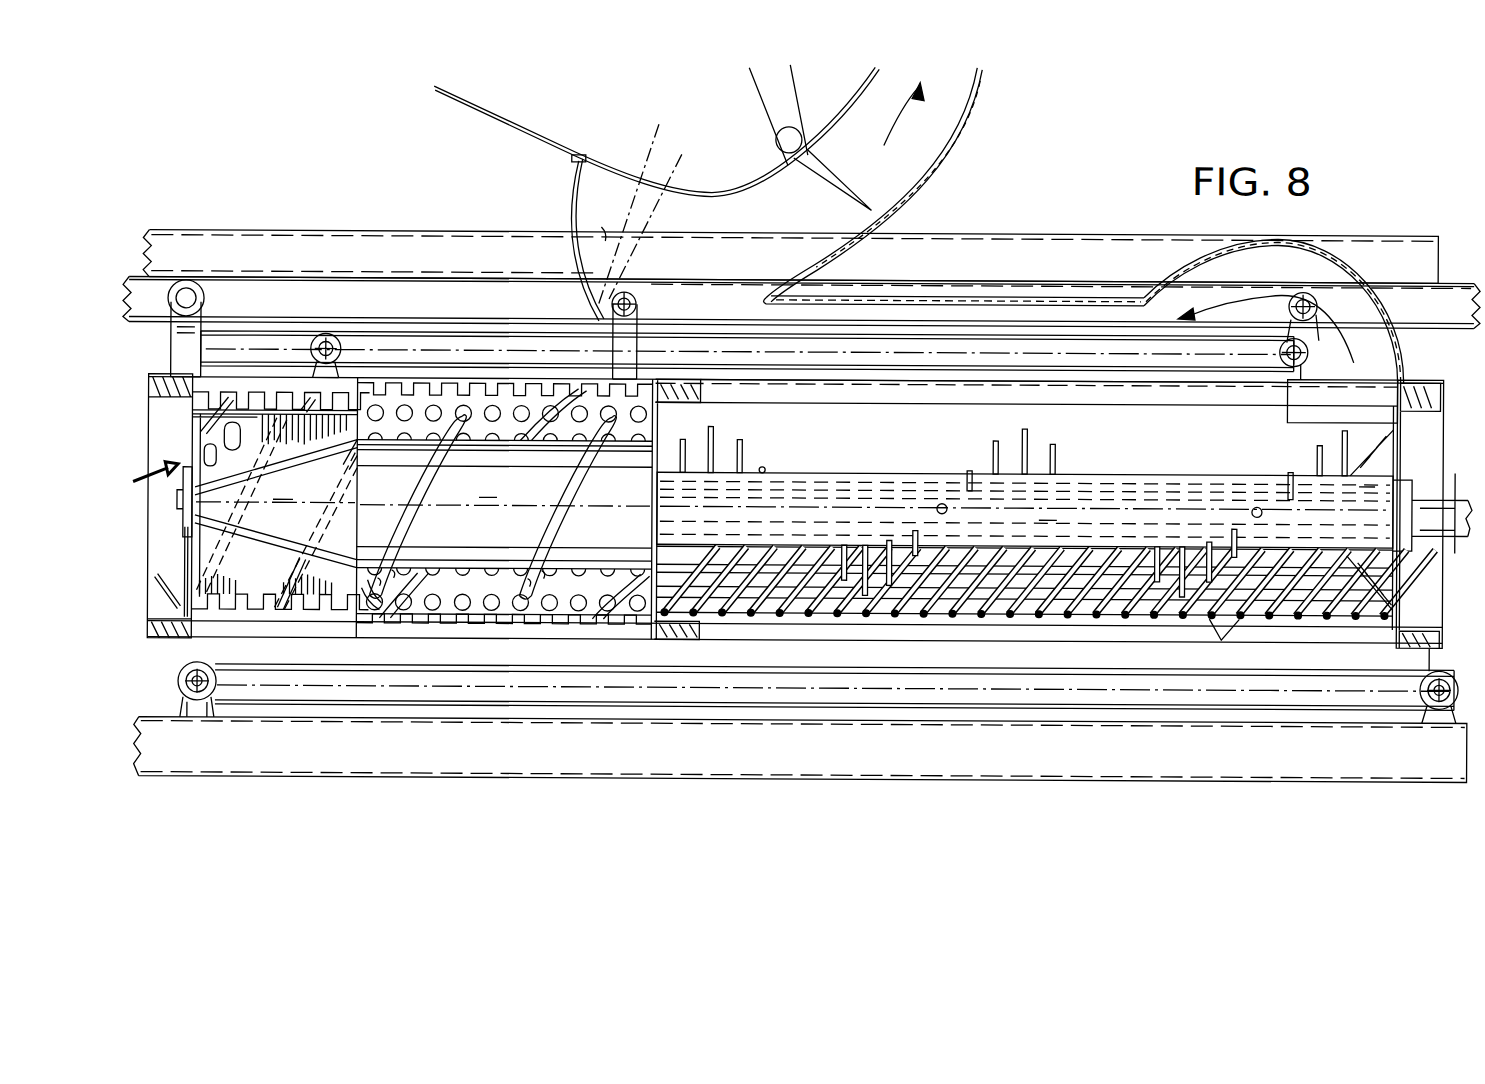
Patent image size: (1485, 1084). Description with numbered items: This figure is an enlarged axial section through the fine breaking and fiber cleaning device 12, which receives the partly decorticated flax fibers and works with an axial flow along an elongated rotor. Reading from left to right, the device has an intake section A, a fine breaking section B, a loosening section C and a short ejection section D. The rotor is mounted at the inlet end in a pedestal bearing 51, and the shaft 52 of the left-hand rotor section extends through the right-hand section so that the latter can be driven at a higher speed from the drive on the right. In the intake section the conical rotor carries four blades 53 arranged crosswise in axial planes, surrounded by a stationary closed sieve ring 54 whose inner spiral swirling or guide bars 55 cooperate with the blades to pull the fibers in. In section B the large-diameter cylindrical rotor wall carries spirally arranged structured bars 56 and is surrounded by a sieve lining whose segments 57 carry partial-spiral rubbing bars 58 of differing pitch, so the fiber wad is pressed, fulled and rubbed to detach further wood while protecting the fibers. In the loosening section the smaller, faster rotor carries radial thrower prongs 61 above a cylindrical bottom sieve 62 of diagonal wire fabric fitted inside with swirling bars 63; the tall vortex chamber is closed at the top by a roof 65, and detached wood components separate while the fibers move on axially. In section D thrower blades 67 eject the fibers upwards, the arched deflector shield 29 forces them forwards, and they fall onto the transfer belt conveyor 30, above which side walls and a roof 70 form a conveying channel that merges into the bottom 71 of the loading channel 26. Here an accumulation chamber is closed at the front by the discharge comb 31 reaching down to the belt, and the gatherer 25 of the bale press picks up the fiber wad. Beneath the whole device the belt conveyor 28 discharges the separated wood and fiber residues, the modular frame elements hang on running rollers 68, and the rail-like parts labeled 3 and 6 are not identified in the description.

The frame rail 3 is at (295, 248).
The guide rail 6 is at (248, 296).
The fine breaking and fiber cleaning device 12 is at (932, 660).
The gatherer 25 is at (837, 180).
The loading channel 26 is at (860, 133).
The belt conveyor 28 is at (767, 698).
The arched deflector shield 29 is at (1362, 257).
The transfer belt conveyor 30 is at (492, 334).
The discharge comb 31 is at (570, 202).
The pedestal bearing 51 is at (183, 565).
The shaft 52 is at (865, 497).
The blades 53 is at (268, 420).
The sieve ring 54 is at (252, 410).
The spiral swirling or guide bars 55 is at (192, 414).
The structured bars 56 is at (568, 515).
The sieve lining segments 57 is at (504, 614).
The rubbing bars 58 is at (388, 616).
The thrower prongs 61 is at (1050, 444).
The bottom sieve 62 is at (1027, 610).
The swirling bars 63 is at (1223, 646).
The roof 65 is at (823, 381).
The thrower blades 67 is at (1377, 568).
The running rollers 68 is at (187, 283).
The roof 70 is at (1015, 295).
The bottom of the loading channel 71 is at (907, 188).